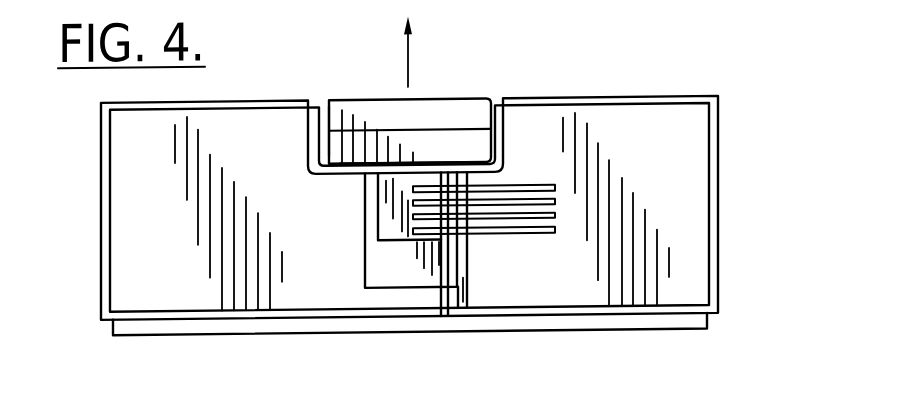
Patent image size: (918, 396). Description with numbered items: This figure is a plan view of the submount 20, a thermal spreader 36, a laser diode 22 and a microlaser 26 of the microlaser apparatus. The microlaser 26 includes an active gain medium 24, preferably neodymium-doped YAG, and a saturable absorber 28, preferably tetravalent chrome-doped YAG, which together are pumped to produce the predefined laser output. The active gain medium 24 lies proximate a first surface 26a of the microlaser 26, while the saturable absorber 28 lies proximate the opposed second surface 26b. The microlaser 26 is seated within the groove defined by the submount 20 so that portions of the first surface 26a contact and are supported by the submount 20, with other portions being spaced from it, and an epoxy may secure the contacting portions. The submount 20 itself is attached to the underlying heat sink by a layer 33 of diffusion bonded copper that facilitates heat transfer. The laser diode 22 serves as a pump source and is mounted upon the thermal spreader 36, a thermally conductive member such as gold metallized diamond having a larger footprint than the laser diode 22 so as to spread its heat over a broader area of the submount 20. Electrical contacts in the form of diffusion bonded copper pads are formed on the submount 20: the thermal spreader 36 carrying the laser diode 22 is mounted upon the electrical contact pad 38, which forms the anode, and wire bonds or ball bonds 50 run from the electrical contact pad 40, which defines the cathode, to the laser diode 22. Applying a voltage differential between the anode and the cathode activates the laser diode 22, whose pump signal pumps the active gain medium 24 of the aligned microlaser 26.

The submount 20 is at (439, 185).
The laser diode 22 is at (432, 120).
The active gain medium 24 is at (451, 138).
The microlaser 26 is at (431, 98).
The first surface 26a is at (333, 83).
The second surface 26b is at (338, 102).
The saturable absorber 28 is at (448, 92).
The layer of diffusion bonded copper 33 is at (410, 343).
The thermal spreader 36 is at (414, 268).
The electrical contact pad 38 is at (658, 236).
The electrical contact pad 40 is at (228, 246).
The wire bonds or ball bonds 50 is at (489, 242).